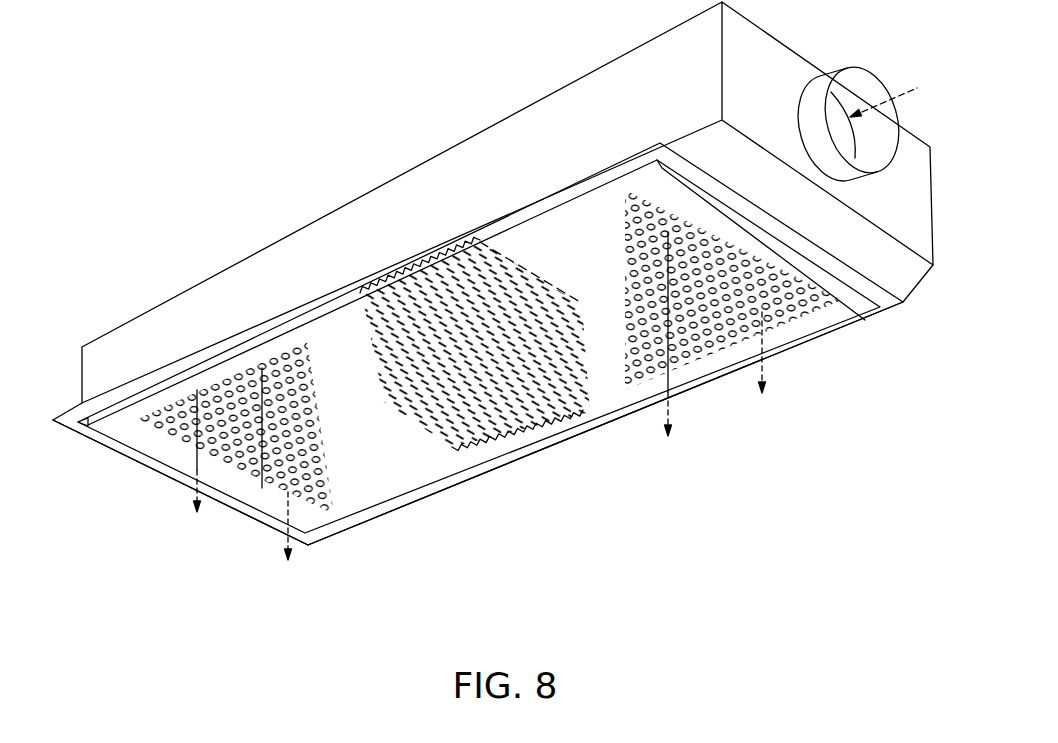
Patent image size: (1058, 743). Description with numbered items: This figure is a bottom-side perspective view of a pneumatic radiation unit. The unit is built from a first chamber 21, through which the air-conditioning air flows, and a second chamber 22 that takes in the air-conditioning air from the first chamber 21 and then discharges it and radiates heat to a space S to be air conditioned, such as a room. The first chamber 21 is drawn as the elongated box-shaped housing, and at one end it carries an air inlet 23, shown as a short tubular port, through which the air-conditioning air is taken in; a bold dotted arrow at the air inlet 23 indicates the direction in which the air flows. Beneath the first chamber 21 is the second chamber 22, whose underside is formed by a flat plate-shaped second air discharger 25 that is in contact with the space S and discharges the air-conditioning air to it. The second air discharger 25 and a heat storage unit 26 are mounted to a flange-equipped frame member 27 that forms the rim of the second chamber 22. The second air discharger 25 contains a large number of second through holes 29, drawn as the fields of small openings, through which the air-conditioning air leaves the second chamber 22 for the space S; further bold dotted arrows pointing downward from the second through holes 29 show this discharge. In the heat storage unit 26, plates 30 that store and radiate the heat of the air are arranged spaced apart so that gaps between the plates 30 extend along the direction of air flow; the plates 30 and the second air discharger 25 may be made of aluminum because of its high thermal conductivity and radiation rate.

The first chamber 21 is at (263, 244).
The second chamber 22 is at (333, 543).
The air inlet 23 is at (856, 86).
The second air discharger 25 is at (338, 494).
The heat storage unit 26 is at (452, 448).
The flange-equipped frame member 27 is at (143, 466).
The second through holes 29 is at (267, 478).
The plates 30 is at (522, 458).
The space to be air conditioned S is at (625, 612).